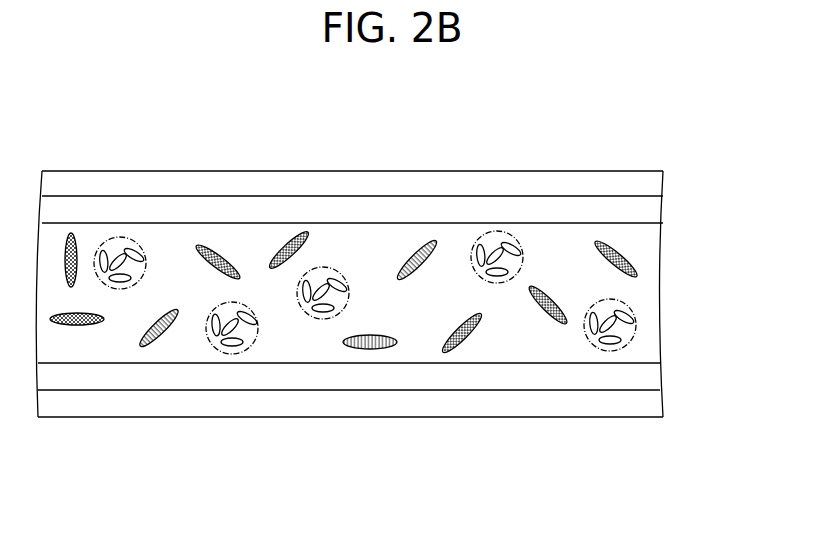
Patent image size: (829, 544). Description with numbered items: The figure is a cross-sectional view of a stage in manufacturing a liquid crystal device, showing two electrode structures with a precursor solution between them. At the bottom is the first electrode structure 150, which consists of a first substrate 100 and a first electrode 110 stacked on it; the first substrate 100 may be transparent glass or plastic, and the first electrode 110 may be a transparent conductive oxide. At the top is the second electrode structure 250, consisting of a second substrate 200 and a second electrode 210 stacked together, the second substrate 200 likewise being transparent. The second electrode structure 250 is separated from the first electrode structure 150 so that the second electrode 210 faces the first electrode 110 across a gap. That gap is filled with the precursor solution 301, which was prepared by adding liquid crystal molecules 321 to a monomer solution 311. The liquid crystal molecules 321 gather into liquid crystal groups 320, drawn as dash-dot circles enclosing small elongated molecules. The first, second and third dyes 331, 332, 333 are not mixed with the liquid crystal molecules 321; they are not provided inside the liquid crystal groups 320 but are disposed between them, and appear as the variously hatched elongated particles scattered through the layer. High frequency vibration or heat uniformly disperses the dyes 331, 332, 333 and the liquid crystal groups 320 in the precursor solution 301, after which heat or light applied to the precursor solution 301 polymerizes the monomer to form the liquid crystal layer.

The first substrate 100 is at (650, 403).
The first electrode 110 is at (650, 375).
The first electrode structure 150 is at (415, 390).
The second substrate 200 is at (650, 183).
The second electrode 210 is at (650, 210).
The second electrode structure 250 is at (417, 197).
The precursor solution 301 is at (345, 313).
The monomer solution 311 is at (188, 350).
The liquid crystal group 320 is at (243, 295).
The liquid crystal molecule 321 is at (250, 314).
The first dye 331 is at (368, 349).
The second dye 332 is at (467, 338).
The third dye 333 is at (545, 380).